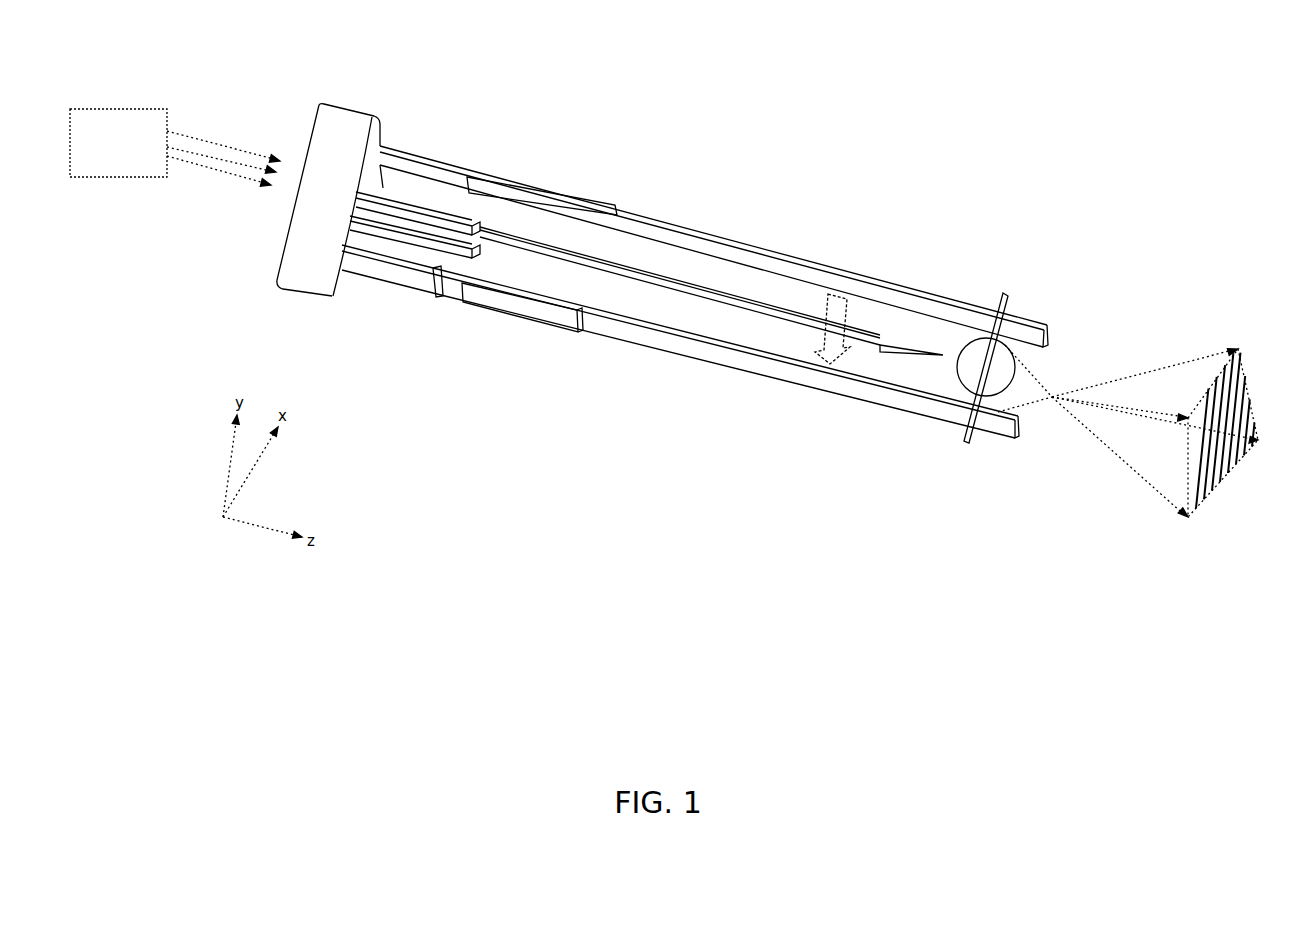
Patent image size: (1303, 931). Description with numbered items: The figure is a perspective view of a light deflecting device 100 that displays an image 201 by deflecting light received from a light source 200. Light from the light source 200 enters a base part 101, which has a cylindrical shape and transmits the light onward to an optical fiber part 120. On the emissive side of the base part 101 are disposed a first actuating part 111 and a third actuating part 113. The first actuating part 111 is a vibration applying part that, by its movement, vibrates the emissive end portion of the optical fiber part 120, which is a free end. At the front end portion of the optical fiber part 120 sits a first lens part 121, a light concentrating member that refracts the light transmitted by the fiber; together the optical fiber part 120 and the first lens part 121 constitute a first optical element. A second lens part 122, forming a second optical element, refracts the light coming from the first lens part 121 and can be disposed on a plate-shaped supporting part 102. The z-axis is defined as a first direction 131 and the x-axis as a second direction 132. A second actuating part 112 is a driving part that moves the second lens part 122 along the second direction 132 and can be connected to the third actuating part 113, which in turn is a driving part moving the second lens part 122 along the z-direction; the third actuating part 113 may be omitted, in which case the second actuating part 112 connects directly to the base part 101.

The light deflecting device 100 is at (767, 124).
The base part 101 is at (347, 118).
The supporting part 102 is at (641, 214).
The first actuating part 111 is at (393, 217).
The second actuating part 112 is at (530, 176).
The third actuating part 113 is at (420, 152).
The optical fiber part 120 is at (685, 290).
The first lens part 121 is at (892, 350).
The second lens part 122 is at (993, 382).
The first direction 131 is at (834, 292).
The second direction 132 is at (1053, 352).
The light source 200 is at (110, 108).
The image 201 is at (1240, 317).